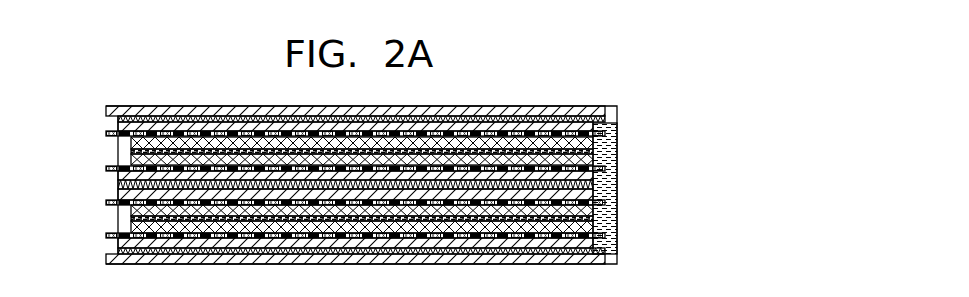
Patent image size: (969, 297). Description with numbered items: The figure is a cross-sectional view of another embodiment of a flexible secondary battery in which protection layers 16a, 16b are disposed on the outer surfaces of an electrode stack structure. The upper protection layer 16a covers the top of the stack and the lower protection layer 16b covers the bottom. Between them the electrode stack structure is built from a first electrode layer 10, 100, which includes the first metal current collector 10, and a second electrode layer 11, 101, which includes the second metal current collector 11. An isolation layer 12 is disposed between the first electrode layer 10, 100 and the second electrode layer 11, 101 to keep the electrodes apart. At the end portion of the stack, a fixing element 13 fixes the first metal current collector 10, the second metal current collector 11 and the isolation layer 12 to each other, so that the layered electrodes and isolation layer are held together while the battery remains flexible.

The first metal current collector 10 is at (119, 174).
The second metal current collector 11 is at (119, 119).
The isolation layer 12 is at (132, 141).
The fixing element 13 is at (610, 126).
The protection layer 16a is at (118, 111).
The protection layer 16b is at (112, 259).
The first electrode layer 100 is at (300, 162).
The second electrode layer 101 is at (119, 126).